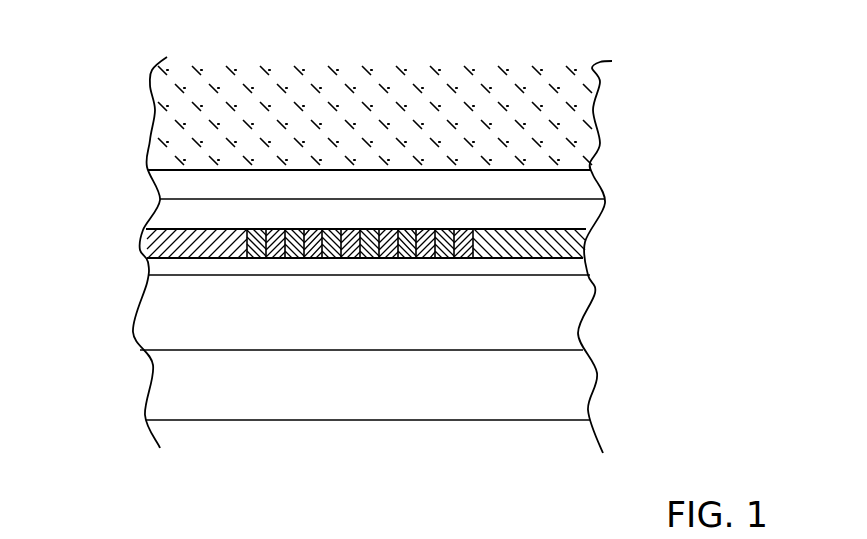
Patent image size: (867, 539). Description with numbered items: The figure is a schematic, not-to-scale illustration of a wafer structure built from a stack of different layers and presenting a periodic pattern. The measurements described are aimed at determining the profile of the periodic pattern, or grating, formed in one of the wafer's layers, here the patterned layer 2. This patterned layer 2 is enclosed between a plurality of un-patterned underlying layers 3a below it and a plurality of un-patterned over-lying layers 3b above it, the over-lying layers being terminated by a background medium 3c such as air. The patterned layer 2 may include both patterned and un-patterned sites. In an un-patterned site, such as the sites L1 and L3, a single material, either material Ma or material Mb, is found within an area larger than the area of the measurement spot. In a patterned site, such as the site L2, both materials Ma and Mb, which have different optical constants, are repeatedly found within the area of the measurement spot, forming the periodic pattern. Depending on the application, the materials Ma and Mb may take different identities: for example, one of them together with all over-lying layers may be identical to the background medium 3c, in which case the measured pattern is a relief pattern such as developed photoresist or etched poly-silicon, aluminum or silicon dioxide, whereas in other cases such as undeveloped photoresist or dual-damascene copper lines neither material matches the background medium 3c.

The patterned layer 2 is at (150, 246).
The underlying layers 3a is at (88, 432).
The over-lying layers 3b is at (79, 171).
The background medium 3c is at (370, 118).
The first material Ma is at (241, 228).
The second material Mb is at (412, 230).
The un-patterned site L1 is at (236, 100).
The patterned site L2 is at (382, 95).
The un-patterned site L3 is at (512, 108).